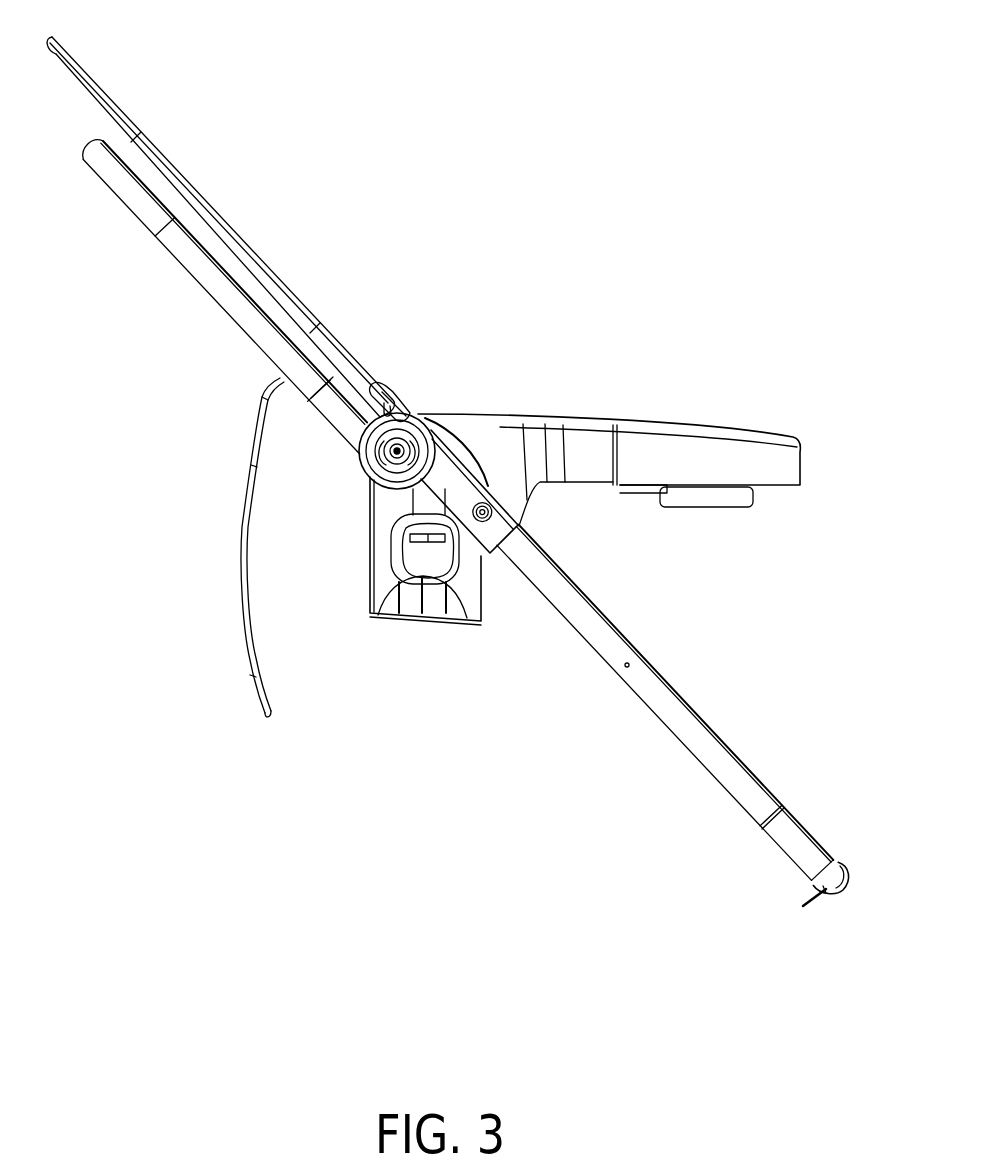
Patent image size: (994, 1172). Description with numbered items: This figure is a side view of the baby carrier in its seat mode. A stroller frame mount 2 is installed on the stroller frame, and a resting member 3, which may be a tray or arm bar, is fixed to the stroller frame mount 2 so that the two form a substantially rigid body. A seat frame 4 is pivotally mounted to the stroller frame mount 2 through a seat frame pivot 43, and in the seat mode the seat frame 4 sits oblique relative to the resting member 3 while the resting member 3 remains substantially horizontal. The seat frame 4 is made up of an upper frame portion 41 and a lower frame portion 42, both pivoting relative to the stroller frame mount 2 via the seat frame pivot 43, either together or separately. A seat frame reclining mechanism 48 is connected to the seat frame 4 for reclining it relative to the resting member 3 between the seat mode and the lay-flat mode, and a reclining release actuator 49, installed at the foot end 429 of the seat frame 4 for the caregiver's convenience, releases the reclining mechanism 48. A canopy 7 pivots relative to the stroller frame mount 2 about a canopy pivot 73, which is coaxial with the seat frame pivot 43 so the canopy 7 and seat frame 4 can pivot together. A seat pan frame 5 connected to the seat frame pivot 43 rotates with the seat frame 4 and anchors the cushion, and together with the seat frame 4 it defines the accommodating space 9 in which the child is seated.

The stroller frame mount 2 is at (467, 597).
The resting member 3 is at (777, 470).
The seat frame 4 is at (400, 136).
The seat pan frame 5 is at (241, 598).
The canopy 7 is at (97, 98).
The accommodating space 9 is at (207, 515).
The upper frame portion 41 is at (213, 283).
The lower frame portion 42 is at (683, 730).
The seat frame pivot 43 is at (392, 478).
The seat frame reclining mechanism 48 is at (420, 404).
The reclining release actuator 49 is at (838, 856).
The canopy pivot 73 is at (392, 450).
The foot end 429 is at (800, 847).